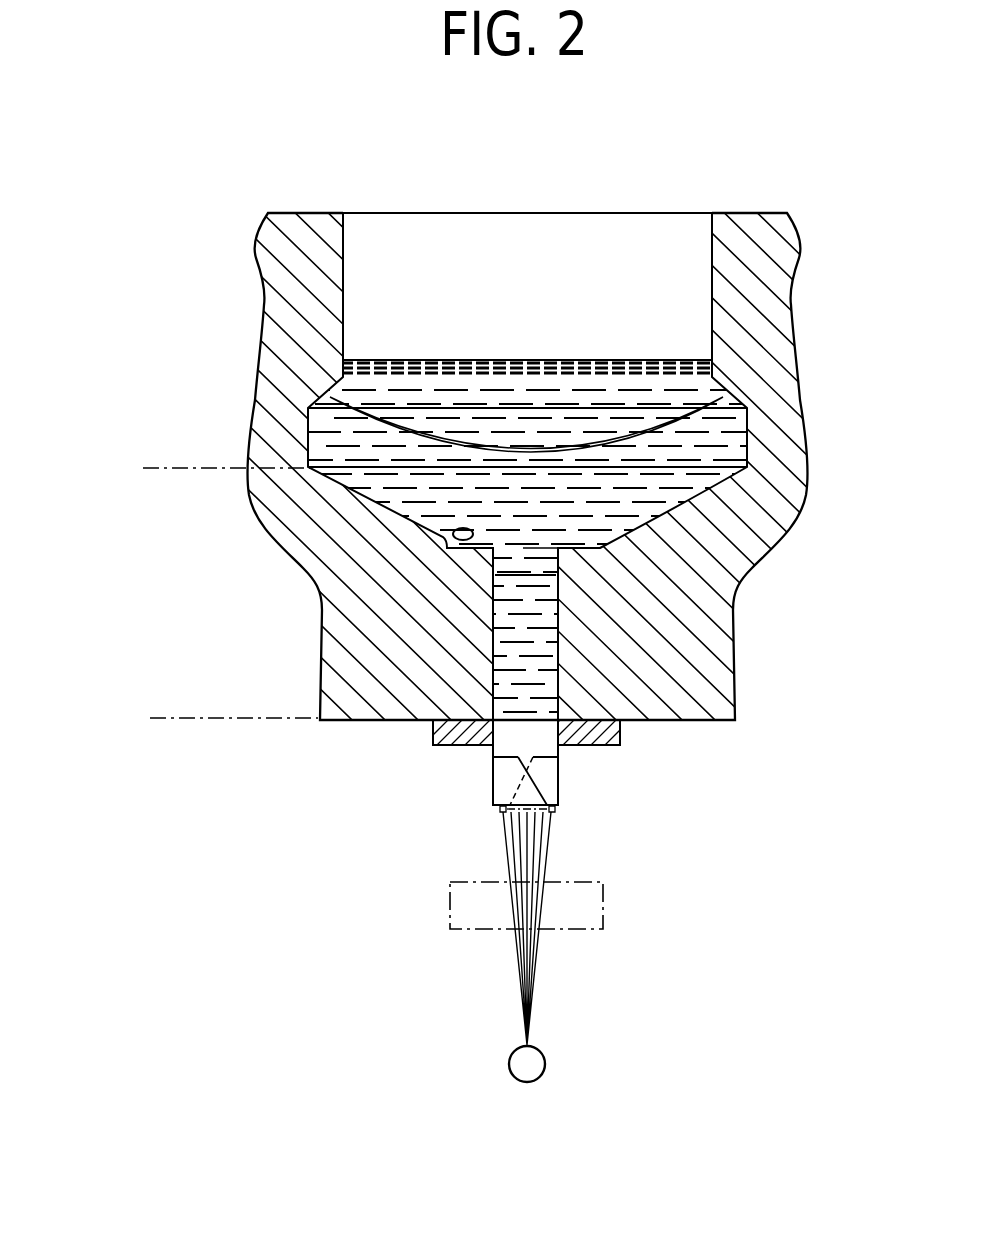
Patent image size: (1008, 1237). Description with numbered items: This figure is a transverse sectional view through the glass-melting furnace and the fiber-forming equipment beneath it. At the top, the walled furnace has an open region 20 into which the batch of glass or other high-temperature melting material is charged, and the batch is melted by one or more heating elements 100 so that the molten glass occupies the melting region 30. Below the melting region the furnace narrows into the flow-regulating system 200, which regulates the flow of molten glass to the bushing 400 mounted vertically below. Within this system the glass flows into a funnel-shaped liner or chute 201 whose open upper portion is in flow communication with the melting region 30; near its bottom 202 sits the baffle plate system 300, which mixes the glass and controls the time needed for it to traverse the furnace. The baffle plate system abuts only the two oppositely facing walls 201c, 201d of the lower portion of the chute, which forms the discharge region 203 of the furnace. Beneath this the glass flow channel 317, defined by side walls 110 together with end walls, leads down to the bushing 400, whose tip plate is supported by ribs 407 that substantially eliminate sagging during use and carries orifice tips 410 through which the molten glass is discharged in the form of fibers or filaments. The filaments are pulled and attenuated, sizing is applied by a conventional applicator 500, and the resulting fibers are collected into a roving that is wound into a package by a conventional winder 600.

The open region 20 is at (653, 258).
The melting region 30 is at (733, 427).
The heating element 100 is at (367, 421).
The flow-regulating system 200 is at (128, 468).
The funnel-shaped liner or chute 201 is at (460, 529).
The oppositely facing wall 201c is at (562, 558).
The oppositely facing wall 201d is at (493, 555).
The bottom of chute 202 is at (523, 550).
The discharge region 203 is at (493, 708).
The side wall 110 is at (562, 600).
The baffle plate system 300 is at (536, 574).
The glass flow channel 317 is at (560, 655).
The bushing 400 is at (521, 762).
The rib 407 is at (548, 780).
The tip 410 is at (558, 808).
The applicator 500 is at (603, 902).
The winder 600 is at (546, 1064).